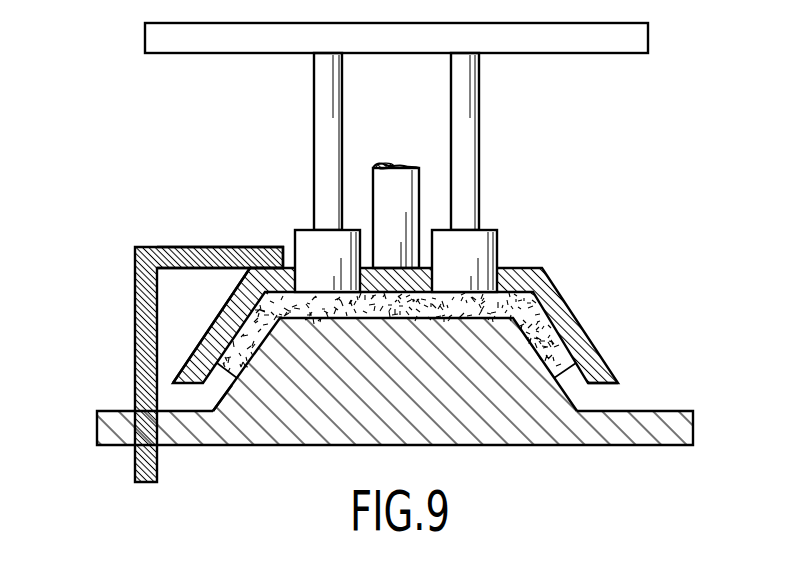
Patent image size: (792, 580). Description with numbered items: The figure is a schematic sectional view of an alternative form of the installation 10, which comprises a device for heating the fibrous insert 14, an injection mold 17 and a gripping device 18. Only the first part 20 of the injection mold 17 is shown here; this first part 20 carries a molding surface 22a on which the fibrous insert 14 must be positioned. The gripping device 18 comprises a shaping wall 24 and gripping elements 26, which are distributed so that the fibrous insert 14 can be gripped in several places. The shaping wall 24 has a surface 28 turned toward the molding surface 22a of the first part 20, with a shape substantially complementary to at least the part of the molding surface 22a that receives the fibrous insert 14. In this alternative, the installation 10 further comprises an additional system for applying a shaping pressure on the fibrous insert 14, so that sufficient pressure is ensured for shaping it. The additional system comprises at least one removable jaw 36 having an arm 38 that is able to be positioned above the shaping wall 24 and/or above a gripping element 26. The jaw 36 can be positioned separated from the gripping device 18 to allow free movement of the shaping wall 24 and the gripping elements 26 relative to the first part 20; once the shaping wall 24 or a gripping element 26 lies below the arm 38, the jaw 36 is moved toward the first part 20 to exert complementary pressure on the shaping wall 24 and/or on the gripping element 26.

The installation 10 is at (626, 170).
The fibrous insert 14 is at (220, 338).
The injection mold 17 is at (645, 373).
The gripping device 18 is at (618, 341).
The first part 20 is at (670, 428).
The molding surface 22a is at (227, 396).
The shaping wall 24 is at (587, 302).
The gripping element 26 is at (290, 231).
The surface 28 is at (256, 305).
The removable jaw 36 is at (128, 268).
The arm 38 is at (210, 242).